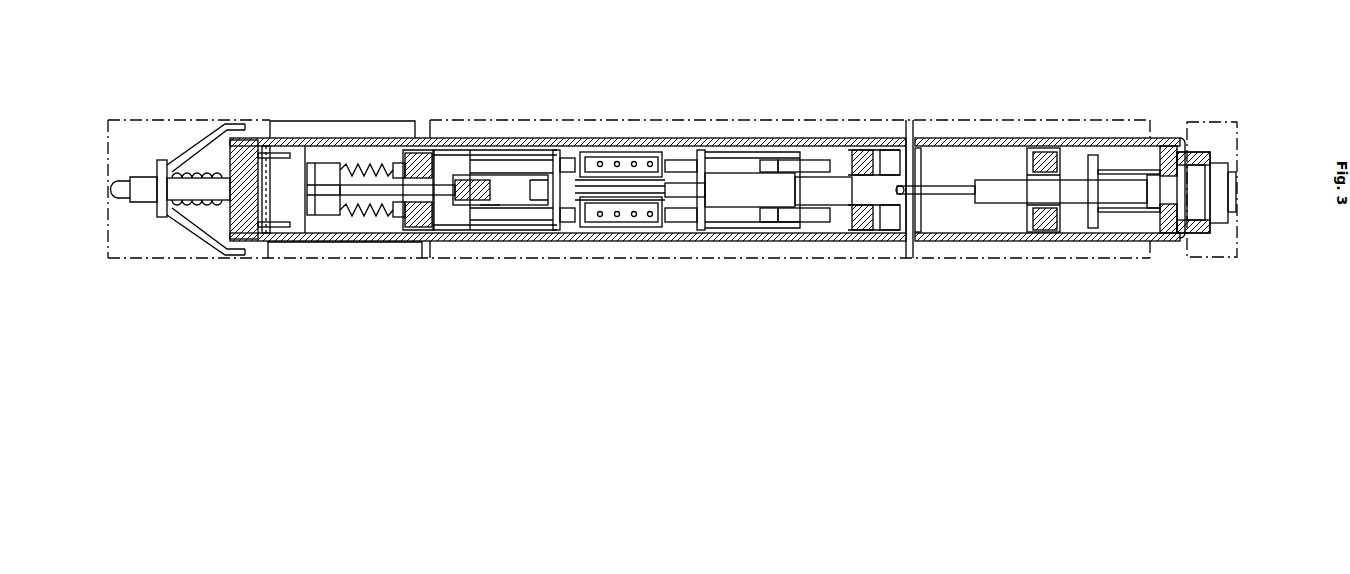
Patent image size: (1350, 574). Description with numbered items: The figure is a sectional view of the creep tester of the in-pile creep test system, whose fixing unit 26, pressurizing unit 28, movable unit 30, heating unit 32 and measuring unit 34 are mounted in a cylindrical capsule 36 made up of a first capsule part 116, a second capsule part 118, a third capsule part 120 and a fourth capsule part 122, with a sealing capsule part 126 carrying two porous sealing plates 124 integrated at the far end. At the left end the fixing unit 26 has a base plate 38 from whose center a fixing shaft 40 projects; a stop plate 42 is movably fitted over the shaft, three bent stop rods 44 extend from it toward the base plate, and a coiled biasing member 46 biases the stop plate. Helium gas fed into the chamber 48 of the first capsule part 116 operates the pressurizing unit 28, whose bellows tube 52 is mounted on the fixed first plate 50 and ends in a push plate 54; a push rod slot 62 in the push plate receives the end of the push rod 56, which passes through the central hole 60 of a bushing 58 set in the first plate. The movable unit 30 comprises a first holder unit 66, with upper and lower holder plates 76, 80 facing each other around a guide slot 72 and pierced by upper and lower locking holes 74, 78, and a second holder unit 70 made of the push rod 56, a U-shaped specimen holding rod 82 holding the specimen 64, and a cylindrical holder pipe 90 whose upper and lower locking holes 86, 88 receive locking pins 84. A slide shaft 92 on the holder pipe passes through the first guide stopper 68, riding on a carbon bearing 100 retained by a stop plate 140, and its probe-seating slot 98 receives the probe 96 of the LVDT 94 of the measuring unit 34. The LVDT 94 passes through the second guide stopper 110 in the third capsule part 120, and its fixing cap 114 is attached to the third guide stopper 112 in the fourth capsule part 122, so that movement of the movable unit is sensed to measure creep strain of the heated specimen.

The fixing unit 26 is at (192, 120).
The pressurizing unit 28 is at (296, 121).
The movable unit 30 is at (432, 121).
The heating unit 32 is at (620, 152).
The measuring unit 34 is at (920, 260).
The capsule 36 is at (258, 242).
The base plate 38 is at (263, 140).
The fixing shaft 40 is at (192, 200).
The stop plate 42 is at (160, 205).
The stop rods 44 is at (236, 124).
The coiled biasing member 46 is at (170, 168).
The chamber 48 is at (302, 160).
The first plate 50 is at (420, 140).
The bellows tube 52 is at (365, 170).
The push plate 54 is at (320, 163).
The push rod 56 is at (447, 185).
The bushing 58 is at (420, 227).
The central hole 60 is at (410, 195).
The push rod slot 62 is at (303, 242).
The specimen 64 is at (703, 232).
The first holder unit 66 is at (485, 152).
The first guide stopper 68 is at (868, 150).
The second holder unit 70 is at (730, 152).
The guide slot 72 is at (515, 205).
The upper locking holes 74 is at (503, 160).
The upper holder plate 76 is at (570, 160).
The lower locking holes 78 is at (488, 205).
The lower holder plate 80 is at (563, 222).
The specimen holding rod 82 is at (598, 227).
The locking pins 84 is at (702, 150).
The upper locking holes 86 is at (768, 222).
The lower locking holes 88 is at (785, 222).
The cylindrical holder pipe 90 is at (760, 173).
The slide shaft 92 is at (832, 205).
The LVDT 94 is at (995, 203).
The probe 96 is at (925, 195).
The probe-seating slot 98 is at (922, 188).
The bearing 100 is at (872, 242).
The second guide stopper 110 is at (1048, 242).
The third guide stopper 112 is at (1170, 242).
The fixing cap 114 is at (1127, 212).
The first capsule part 116 is at (321, 242).
The second capsule part 118 is at (805, 138).
The third capsule part 120 is at (968, 242).
The fourth capsule part 122 is at (1092, 242).
The porous sealing plates 124 is at (1236, 190).
The sealing capsule part 126 is at (1030, 120).
The stop plate 140 is at (910, 155).